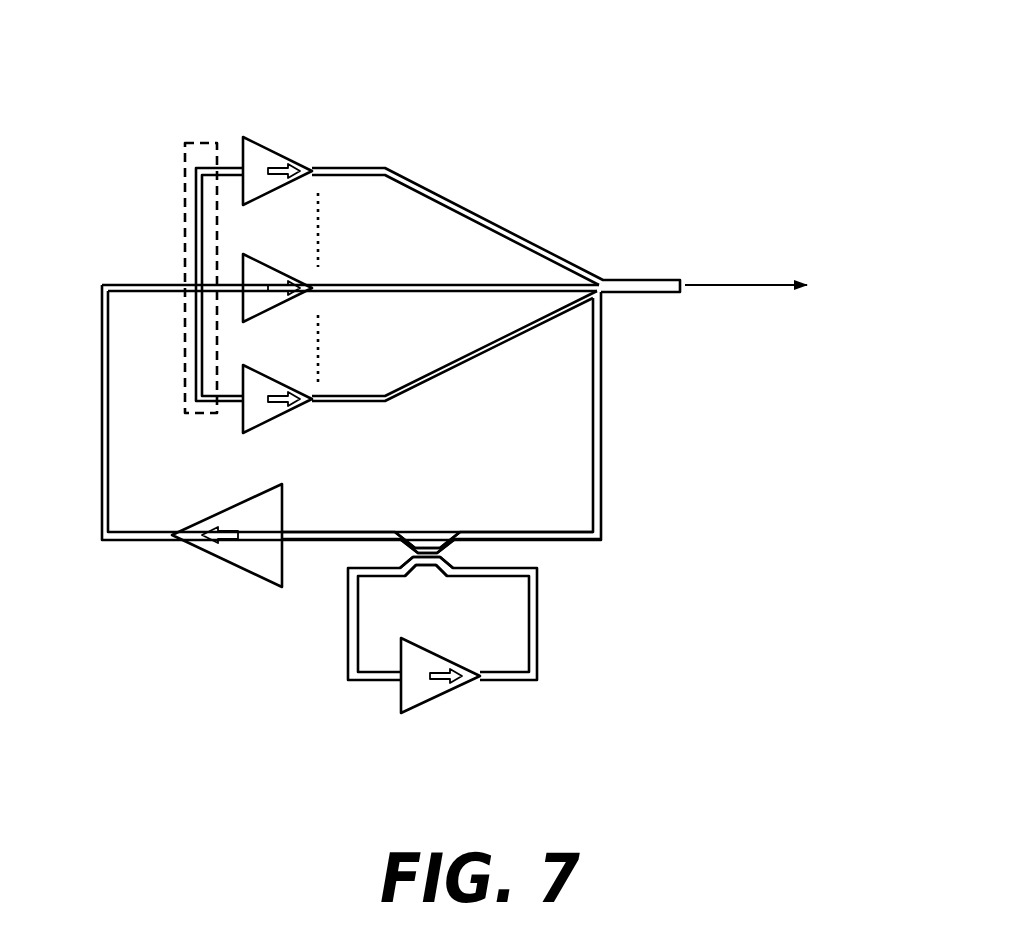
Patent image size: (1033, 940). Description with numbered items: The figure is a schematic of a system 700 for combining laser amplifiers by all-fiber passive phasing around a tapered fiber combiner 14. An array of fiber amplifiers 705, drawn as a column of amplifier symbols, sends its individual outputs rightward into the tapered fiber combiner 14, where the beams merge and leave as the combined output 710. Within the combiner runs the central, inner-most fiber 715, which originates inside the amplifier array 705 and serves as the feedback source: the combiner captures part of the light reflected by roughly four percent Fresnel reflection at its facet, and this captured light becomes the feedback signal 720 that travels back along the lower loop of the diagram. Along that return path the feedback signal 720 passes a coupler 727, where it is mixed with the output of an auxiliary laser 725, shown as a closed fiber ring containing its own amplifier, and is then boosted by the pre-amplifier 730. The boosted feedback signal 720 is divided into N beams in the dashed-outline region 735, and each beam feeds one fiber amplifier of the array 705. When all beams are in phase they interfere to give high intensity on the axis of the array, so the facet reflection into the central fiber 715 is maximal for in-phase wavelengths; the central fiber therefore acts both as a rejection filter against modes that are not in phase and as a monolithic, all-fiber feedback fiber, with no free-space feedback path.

The laser system 700 is at (678, 22).
The array of fiber amplifiers 705 is at (338, 145).
The splitter 735 is at (167, 245).
The tapered fiber combiner 14 is at (634, 260).
The output beam 710 is at (776, 284).
The central fiber 715 is at (611, 380).
The feedback signal 720 is at (514, 478).
The 1×N fiber splitter 727 is at (456, 519).
The auxiliary laser 725 is at (504, 635).
The pre-amplifier 730 is at (249, 583).